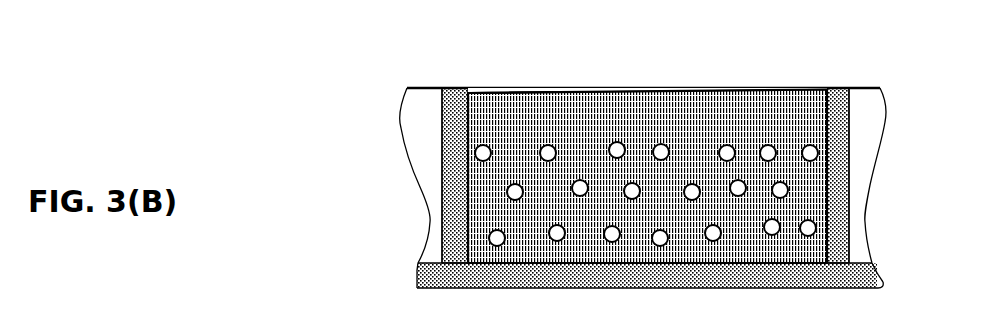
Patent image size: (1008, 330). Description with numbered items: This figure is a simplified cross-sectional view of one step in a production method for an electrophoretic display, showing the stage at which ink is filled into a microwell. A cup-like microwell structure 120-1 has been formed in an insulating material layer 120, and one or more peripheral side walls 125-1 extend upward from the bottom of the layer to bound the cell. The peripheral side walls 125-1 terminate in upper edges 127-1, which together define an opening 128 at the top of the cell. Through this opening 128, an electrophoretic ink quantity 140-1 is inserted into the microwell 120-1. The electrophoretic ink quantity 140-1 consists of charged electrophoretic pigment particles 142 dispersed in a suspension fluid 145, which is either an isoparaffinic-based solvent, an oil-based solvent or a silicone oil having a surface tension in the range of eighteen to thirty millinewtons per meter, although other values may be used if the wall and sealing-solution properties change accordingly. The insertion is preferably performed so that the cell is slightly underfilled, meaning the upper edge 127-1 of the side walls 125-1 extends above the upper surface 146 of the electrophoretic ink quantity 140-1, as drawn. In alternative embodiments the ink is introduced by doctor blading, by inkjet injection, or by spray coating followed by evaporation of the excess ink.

The insulating material layer 120 is at (430, 275).
The microwell structure 120-1 is at (773, 285).
The peripheral side walls 125-1 is at (448, 203).
The upper edges 127-1 is at (458, 87).
The opening 128 is at (724, 88).
The electrophoretic ink quantity 140-1 is at (766, 92).
The electrophoretic pigment particles 142 is at (562, 105).
The suspension fluid 145 is at (721, 150).
The upper surface 146 is at (505, 90).